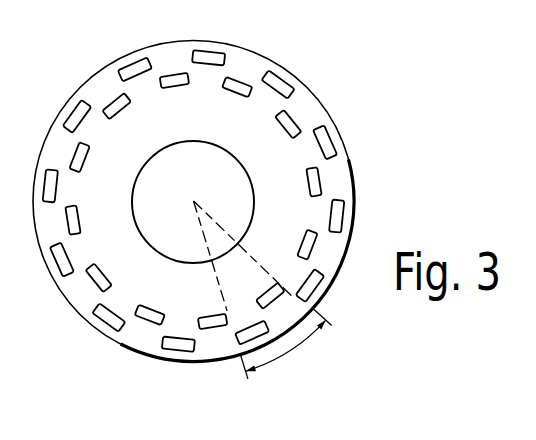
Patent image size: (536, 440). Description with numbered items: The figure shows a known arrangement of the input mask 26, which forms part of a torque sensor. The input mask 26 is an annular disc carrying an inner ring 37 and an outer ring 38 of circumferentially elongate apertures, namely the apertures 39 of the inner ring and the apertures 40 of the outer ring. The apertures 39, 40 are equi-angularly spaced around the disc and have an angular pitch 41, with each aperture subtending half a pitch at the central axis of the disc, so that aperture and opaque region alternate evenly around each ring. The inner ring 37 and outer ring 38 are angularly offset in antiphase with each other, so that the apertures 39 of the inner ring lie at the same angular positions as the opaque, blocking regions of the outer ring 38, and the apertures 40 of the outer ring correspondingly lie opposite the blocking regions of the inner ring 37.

The input mask 26 is at (162, 288).
The inner ring 37 is at (313, 163).
The outer ring 38 is at (223, 47).
The apertures of the inner ring 39 is at (245, 88).
The apertures of the outer ring 40 is at (284, 90).
The angular pitch 41 is at (297, 351).